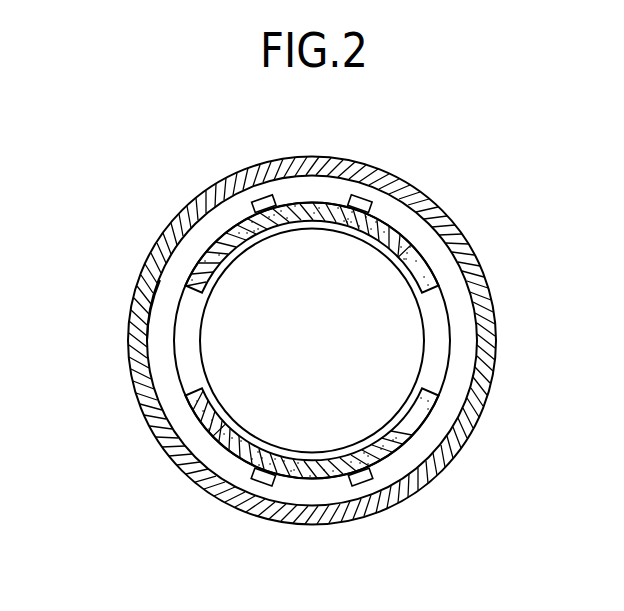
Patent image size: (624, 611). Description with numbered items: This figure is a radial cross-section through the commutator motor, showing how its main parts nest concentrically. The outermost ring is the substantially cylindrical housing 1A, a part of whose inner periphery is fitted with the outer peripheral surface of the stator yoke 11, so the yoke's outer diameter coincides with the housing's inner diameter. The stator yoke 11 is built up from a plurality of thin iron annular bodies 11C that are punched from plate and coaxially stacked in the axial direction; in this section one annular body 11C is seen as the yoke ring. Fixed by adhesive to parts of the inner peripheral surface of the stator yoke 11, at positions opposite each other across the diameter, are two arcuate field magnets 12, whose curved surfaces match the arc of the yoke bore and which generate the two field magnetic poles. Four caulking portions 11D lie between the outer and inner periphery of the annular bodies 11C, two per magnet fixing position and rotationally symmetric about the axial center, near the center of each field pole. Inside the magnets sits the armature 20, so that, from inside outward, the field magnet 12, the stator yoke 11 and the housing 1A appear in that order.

The housing 1A is at (430, 200).
The stator yoke 11 is at (458, 338).
The annular body 11C is at (160, 345).
The caulking portion 11D is at (257, 192).
The field magnet 12 is at (413, 247).
The armature 20 is at (233, 325).